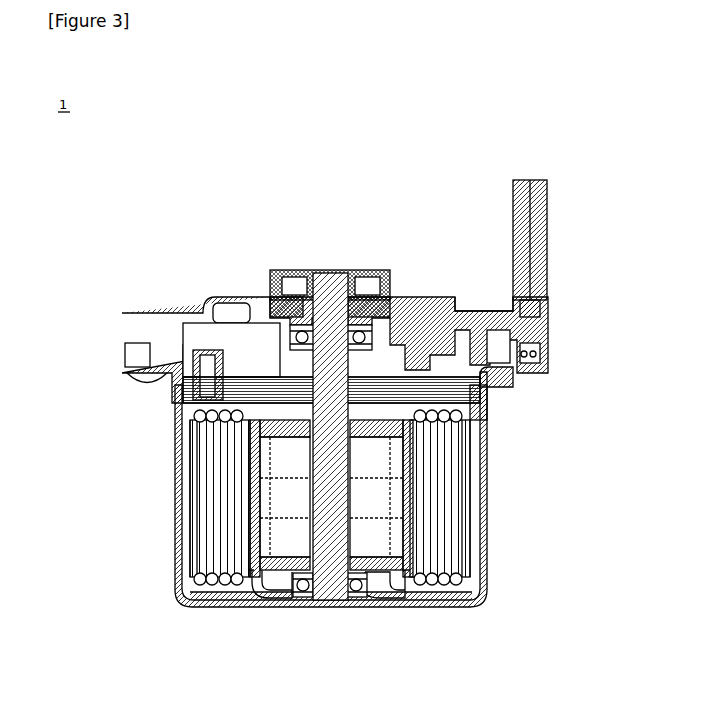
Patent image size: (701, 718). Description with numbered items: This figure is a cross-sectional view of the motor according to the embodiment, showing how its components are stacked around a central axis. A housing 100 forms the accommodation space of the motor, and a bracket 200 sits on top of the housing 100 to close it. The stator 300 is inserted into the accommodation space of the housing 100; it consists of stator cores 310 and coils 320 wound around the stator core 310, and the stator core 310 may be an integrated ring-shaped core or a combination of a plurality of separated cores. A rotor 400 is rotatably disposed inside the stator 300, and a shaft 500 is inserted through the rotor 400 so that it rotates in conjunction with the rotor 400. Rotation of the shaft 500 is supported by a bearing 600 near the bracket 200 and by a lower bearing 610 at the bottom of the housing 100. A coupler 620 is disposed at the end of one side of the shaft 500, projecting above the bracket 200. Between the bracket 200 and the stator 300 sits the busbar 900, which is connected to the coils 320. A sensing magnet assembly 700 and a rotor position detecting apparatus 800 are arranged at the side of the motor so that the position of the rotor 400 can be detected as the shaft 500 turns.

The housing 100 is at (172, 545).
The bracket 200 is at (140, 313).
The stator 300 is at (388, 497).
The stator core 310 is at (440, 471).
The coil 320 is at (447, 545).
The rotor 400 is at (276, 610).
The shaft 500 is at (331, 610).
The bearing 600 is at (403, 295).
The lower bearing 610 is at (377, 610).
The coupler 620 is at (318, 280).
The sensing magnet assembly 700 is at (493, 417).
The rotor position detecting apparatus 800 is at (490, 390).
The busbar 900 is at (175, 405).